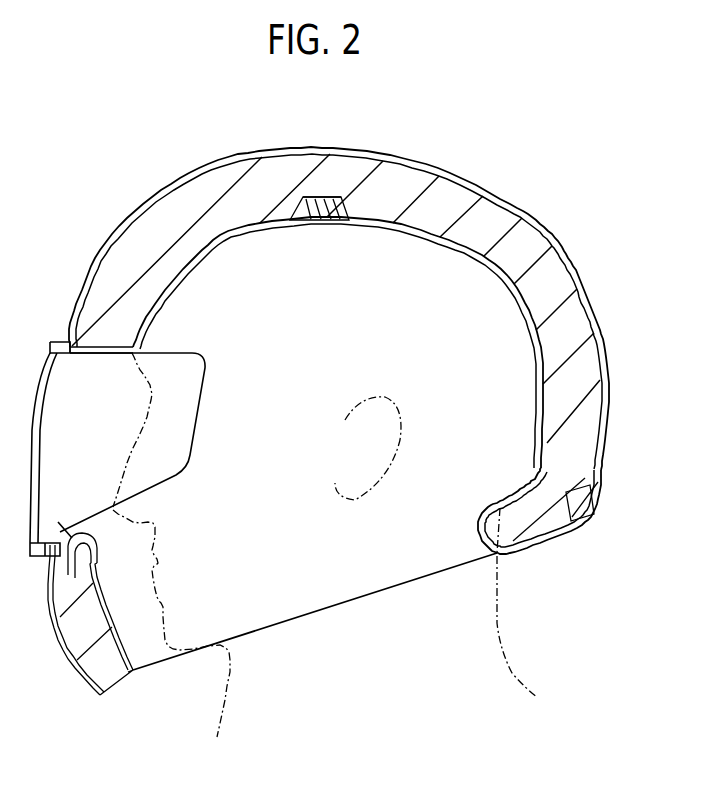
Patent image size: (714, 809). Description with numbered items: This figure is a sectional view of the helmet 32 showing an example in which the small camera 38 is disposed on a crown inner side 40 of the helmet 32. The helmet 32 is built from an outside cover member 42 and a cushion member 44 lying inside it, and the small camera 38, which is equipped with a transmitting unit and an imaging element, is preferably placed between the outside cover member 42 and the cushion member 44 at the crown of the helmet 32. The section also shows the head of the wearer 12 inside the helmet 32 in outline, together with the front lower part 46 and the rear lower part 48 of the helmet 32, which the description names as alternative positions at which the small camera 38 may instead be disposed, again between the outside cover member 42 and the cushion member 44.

The head of wearer 12 is at (512, 673).
The helmet 32 is at (458, 172).
The small camera 38 is at (318, 224).
The crown inner side 40 is at (333, 190).
The outside cover member 42 is at (374, 226).
The cushion member 44 is at (395, 192).
The front lower part 46 is at (128, 686).
The rear lower part 48 is at (534, 553).